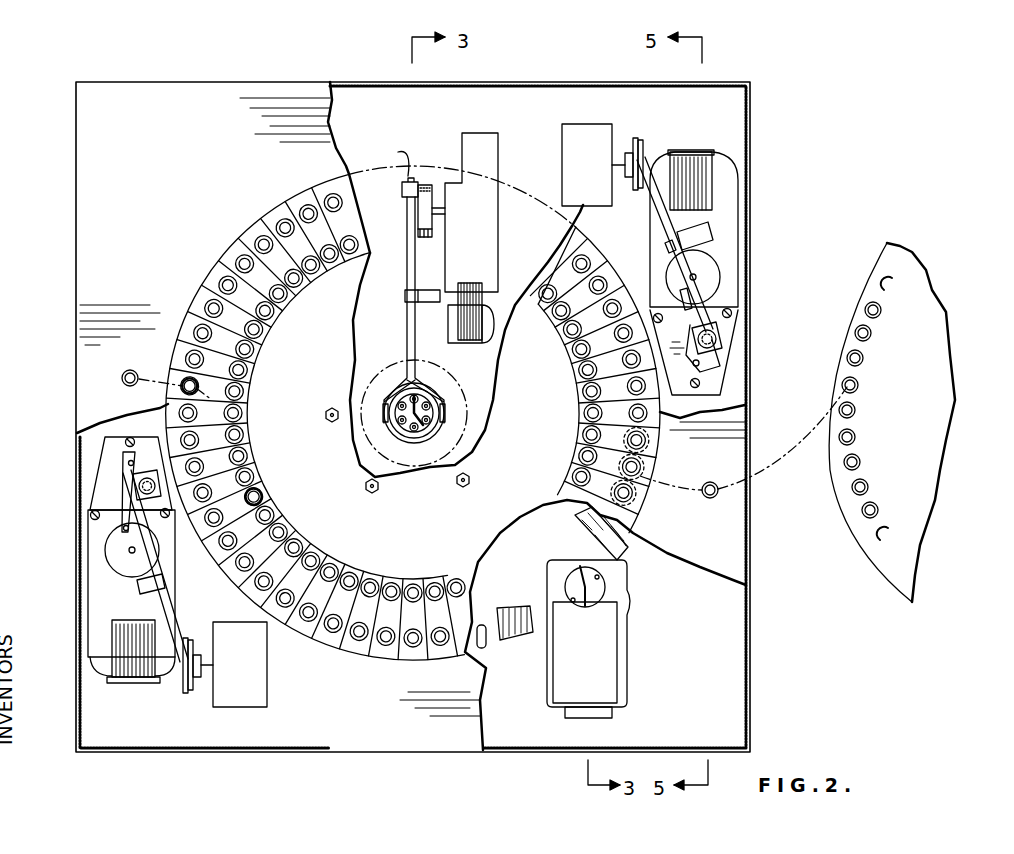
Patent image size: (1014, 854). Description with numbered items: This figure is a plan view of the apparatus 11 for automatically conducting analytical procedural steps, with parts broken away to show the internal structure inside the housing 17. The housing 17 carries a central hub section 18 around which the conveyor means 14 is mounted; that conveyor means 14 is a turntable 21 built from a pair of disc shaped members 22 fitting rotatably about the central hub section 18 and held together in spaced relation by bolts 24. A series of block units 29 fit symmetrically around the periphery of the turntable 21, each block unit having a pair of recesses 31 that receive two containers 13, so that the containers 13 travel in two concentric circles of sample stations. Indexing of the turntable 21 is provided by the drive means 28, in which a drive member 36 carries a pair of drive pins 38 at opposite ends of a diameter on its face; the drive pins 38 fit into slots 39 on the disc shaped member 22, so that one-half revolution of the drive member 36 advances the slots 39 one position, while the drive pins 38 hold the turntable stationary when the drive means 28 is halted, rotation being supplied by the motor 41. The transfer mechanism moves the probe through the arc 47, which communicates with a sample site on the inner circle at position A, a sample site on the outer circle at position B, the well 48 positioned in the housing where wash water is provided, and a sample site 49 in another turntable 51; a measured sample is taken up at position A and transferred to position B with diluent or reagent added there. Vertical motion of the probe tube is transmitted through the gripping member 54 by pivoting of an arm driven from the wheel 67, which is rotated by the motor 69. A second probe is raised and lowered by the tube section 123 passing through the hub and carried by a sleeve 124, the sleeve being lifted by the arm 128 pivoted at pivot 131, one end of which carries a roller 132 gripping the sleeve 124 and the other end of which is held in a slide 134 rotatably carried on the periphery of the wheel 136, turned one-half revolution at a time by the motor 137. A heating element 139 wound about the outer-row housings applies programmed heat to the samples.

The apparatus 11 is at (77, 451).
The containers 13 is at (565, 320).
The conveyor means 14 is at (605, 625).
The housing 17 is at (150, 262).
The central hub section 18 is at (452, 380).
The turntable 21 is at (383, 657).
The disc shaped members 22 is at (398, 521).
The bolts 24 is at (327, 420).
The drive means 28 is at (613, 639).
The block units 29 is at (316, 440).
The recesses 31 is at (592, 377).
The drive member 36 is at (581, 606).
The drive pins 38 is at (599, 578).
The slots 39 is at (518, 636).
The motor 41 is at (607, 665).
The arc 47 is at (778, 472).
The well 48 is at (127, 371).
The sample site 49 is at (843, 381).
The turntable 51 is at (866, 422).
The gripping member 54 is at (713, 348).
The wheel 67 is at (638, 140).
The motor 69 is at (596, 126).
The tube section 123 is at (424, 429).
The sleeve 124 is at (393, 433).
The arm 128 is at (410, 350).
The pivot 131 is at (403, 298).
The roller 132 is at (395, 407).
The slide 134 is at (386, 160).
The wheel 136 is at (421, 185).
The motor 137 is at (482, 140).
The heating element 139 is at (636, 508).
The position A is at (260, 496).
The position B is at (196, 388).